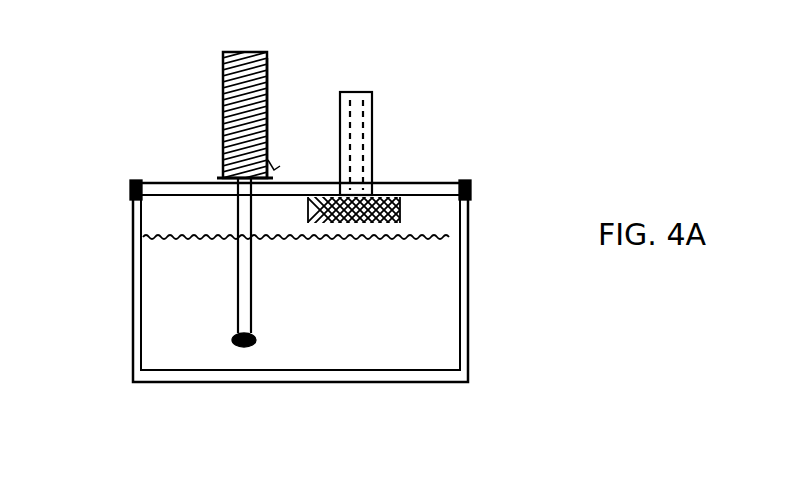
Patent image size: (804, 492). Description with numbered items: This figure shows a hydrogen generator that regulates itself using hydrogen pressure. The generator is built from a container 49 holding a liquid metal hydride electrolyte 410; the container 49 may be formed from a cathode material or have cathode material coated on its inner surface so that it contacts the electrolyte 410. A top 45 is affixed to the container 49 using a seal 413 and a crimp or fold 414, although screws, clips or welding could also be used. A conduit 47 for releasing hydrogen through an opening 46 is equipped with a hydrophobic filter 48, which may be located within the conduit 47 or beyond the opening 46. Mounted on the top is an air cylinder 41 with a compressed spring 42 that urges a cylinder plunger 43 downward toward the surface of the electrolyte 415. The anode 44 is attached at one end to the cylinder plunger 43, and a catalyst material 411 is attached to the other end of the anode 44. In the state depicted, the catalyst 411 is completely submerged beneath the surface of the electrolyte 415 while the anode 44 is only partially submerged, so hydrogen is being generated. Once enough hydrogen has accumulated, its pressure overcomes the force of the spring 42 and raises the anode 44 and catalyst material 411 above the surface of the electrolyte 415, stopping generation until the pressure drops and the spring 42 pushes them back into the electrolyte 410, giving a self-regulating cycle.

The air cylinder 41 is at (278, 58).
The compressed spring 42 is at (222, 98).
The cylinder plunger 43 is at (280, 162).
The anode 44 is at (247, 220).
The top 45 is at (440, 183).
The opening 46 is at (355, 88).
The conduit 47 is at (372, 148).
The hydrophobic filter 48 is at (397, 198).
The container 49 is at (468, 252).
The liquid metal hydride electrolyte 410 is at (427, 312).
The catalyst material 411 is at (232, 345).
The seal 413 is at (135, 202).
The crimp or fold 414 is at (135, 180).
The surface of the electrolyte 415 is at (170, 240).